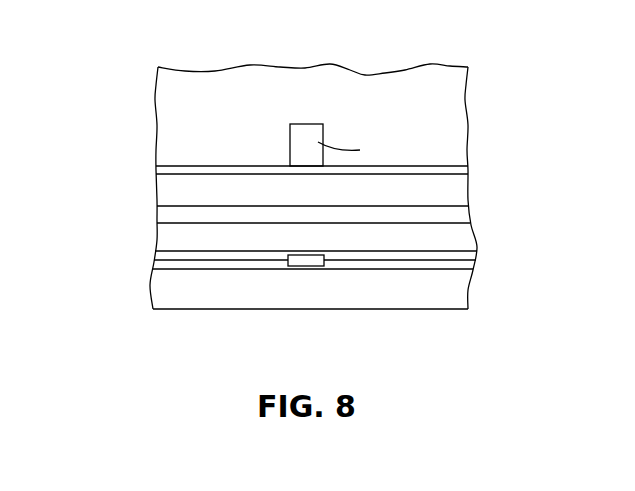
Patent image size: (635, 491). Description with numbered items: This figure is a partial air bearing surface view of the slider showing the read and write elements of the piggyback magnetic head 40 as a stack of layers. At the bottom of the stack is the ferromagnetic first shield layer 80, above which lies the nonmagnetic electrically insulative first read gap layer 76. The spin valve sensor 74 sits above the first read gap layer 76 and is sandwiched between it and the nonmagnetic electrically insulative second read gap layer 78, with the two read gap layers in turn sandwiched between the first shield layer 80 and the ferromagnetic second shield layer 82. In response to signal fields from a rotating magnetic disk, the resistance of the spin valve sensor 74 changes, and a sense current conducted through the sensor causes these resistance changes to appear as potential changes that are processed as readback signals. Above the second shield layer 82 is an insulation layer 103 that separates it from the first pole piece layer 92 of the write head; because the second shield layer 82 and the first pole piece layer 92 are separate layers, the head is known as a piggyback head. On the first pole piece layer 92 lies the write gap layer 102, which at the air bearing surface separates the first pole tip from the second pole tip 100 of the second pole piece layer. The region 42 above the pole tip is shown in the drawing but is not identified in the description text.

The magnetic recording head assembly 40 is at (498, 78).
The top layer 42 is at (158, 97).
The thin gap layer on P1 102 is at (227, 168).
The pedestal P2 100 is at (297, 130).
The first pole layer P1 92 is at (158, 192).
The intermediate layer 103 is at (463, 215).
The second shield layer S2 82 is at (158, 242).
The upper gap layer 78 is at (432, 255).
The read sensor 74 is at (308, 264).
The lower gap layer 76 is at (217, 270).
The first shield layer S1 80 is at (463, 290).